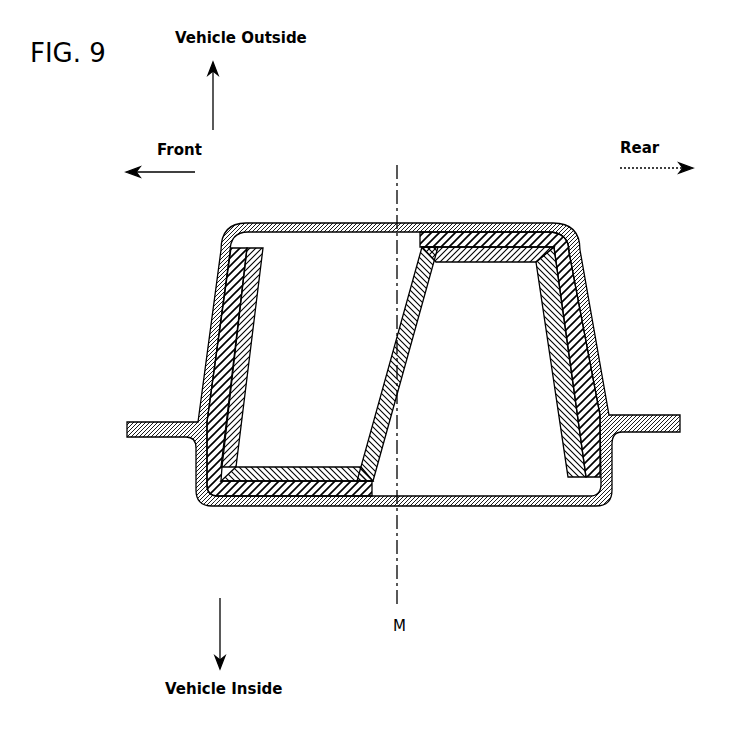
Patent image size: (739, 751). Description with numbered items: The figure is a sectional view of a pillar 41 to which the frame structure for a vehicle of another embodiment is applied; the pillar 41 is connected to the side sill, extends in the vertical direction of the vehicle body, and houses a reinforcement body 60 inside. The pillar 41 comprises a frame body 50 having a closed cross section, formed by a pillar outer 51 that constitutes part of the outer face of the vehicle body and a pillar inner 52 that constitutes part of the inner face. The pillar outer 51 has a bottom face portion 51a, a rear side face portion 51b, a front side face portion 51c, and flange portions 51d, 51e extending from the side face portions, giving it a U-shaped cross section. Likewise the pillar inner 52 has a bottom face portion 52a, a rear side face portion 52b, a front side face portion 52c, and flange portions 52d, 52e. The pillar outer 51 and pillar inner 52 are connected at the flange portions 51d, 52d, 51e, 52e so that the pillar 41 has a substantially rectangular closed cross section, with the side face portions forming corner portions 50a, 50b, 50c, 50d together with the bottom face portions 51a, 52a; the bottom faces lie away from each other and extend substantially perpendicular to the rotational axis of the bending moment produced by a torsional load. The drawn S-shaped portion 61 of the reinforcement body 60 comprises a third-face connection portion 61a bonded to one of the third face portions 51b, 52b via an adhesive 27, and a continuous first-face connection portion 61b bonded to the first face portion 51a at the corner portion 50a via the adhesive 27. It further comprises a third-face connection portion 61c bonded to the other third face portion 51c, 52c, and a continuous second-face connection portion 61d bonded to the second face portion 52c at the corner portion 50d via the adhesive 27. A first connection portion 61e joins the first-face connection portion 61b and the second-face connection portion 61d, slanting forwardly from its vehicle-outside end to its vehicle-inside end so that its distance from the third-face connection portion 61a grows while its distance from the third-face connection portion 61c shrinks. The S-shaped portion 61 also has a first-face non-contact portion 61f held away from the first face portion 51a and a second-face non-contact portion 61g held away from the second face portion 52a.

The adhesive 27 is at (591, 364).
The pillar 41 is at (521, 145).
The frame body 50 is at (474, 223).
The corner portion 50a is at (555, 224).
The corner portion 50b is at (222, 253).
The corner portion 50c is at (613, 507).
The corner portion 50d is at (213, 506).
The pillar outer 51 is at (583, 270).
The bottom face portion 51a is at (413, 222).
The side face portion 51b is at (591, 307).
The side face portion 51c is at (220, 317).
The flange portion 51d is at (660, 415).
The flange portion 51e is at (133, 421).
The pillar inner 52 is at (483, 507).
The bottom face portion 52a is at (440, 507).
The side face portion 52b is at (613, 473).
The side face portion 52c is at (207, 492).
The flange portion 52d is at (657, 432).
The flange portion 52e is at (140, 438).
The reinforcement body 60 is at (556, 389).
The S-shaped portion 61 is at (256, 225).
The third-face connection portion 61a is at (550, 333).
The first-face connection portion 61b is at (493, 263).
The third-face connection portion 61c is at (250, 337).
The second-face connection portion 61d is at (267, 467).
The first connection portion 61e is at (412, 352).
The first-face non-contact portion 61f is at (322, 250).
The second-face non-contact portion 61g is at (515, 481).